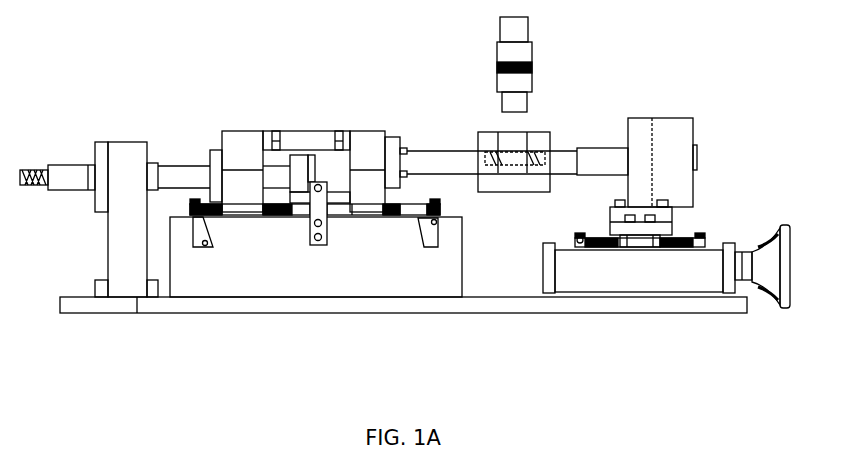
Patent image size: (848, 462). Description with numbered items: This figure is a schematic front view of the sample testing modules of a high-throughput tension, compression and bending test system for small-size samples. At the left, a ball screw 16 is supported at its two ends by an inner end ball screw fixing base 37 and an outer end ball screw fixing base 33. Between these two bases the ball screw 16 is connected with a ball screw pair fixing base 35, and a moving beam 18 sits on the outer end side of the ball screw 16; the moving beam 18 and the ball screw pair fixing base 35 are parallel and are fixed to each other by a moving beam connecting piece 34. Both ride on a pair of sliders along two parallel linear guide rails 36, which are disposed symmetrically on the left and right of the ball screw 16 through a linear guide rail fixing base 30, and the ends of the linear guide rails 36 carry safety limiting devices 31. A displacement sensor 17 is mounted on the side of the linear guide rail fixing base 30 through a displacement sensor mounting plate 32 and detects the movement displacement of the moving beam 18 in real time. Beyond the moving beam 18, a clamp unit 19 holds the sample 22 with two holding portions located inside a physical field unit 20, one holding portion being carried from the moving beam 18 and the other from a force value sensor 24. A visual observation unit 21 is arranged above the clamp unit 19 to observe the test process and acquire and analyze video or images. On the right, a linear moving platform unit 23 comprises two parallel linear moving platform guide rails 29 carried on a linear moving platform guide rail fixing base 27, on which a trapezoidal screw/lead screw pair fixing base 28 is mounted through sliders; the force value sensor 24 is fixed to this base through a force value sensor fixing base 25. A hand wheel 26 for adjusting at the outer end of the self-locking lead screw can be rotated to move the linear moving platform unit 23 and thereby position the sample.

The ball screw 16 is at (70, 175).
The displacement sensor 17 is at (335, 192).
The moving beam 18 is at (373, 152).
The clamp unit 19 is at (463, 165).
The physical field unit 20 is at (493, 153).
The visual observation unit 21 is at (522, 98).
The sample 22 is at (512, 155).
The linear moving platform unit 23 is at (588, 238).
The force value sensor 24 is at (660, 162).
The force value sensor fixing base 25 is at (635, 202).
The hand wheel for adjusting 26 is at (772, 303).
The linear moving platform guide rail fixing base 27 is at (702, 270).
The trapezoidal screw/lead screw pair fixing base 28 is at (660, 230).
The linear moving platform guide rail 29 is at (615, 247).
The linear guide rail fixing base 30 is at (448, 277).
The safety limiting device 31 is at (428, 232).
The displacement sensor mounting plate 32 is at (313, 243).
The outer end ball screw fixing base 33 is at (297, 180).
The moving beam connecting piece 34 is at (288, 142).
The ball screw pair fixing base 35 is at (248, 188).
The linear guide rail 36 is at (205, 228).
The inner end ball screw fixing base 37 is at (128, 243).